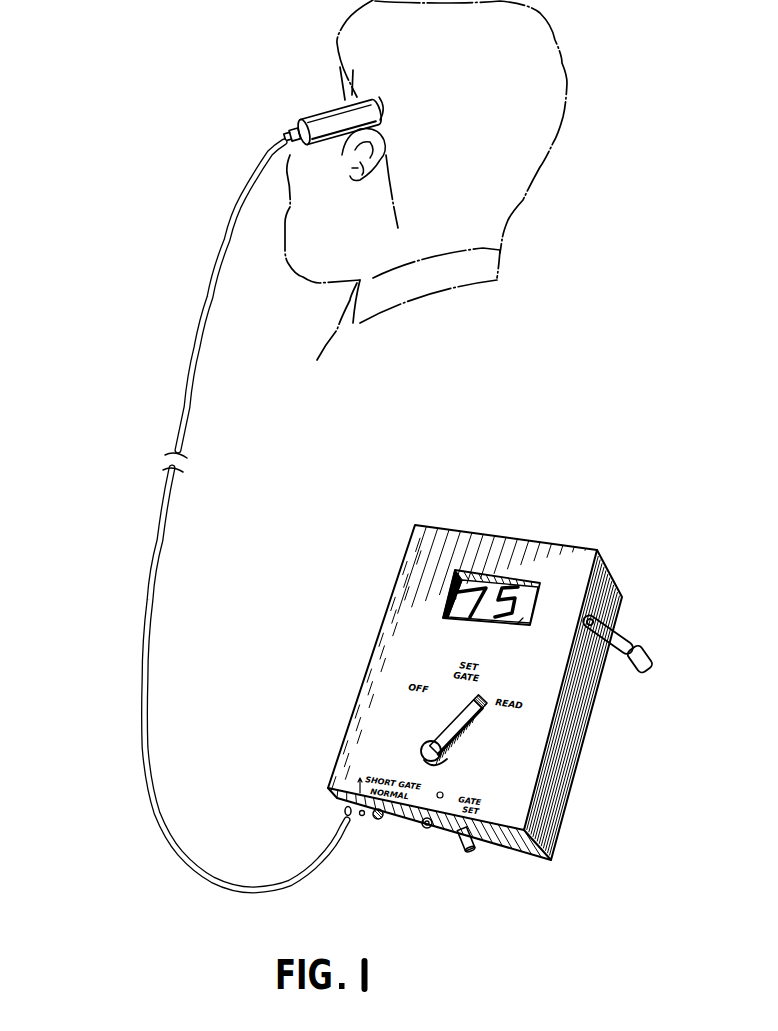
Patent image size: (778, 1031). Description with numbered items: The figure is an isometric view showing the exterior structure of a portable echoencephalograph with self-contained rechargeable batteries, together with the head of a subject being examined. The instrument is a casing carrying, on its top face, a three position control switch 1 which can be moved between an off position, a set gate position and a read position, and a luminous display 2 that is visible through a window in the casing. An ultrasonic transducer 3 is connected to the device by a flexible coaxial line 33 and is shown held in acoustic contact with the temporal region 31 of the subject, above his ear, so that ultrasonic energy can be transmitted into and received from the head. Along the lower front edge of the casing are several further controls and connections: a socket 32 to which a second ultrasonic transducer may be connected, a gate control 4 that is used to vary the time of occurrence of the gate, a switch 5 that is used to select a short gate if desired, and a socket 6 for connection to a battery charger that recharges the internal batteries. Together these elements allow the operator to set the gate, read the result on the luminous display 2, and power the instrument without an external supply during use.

The three position control switch 1 is at (455, 768).
The luminous display 2 is at (510, 582).
The ultrasonic transducer 3 is at (313, 117).
The gate control 4 is at (468, 852).
The switch 5 is at (386, 822).
The socket 6 is at (430, 830).
The temporal region 31 is at (386, 104).
The socket 32 is at (347, 827).
The flexible coaxial line 33 is at (147, 657).